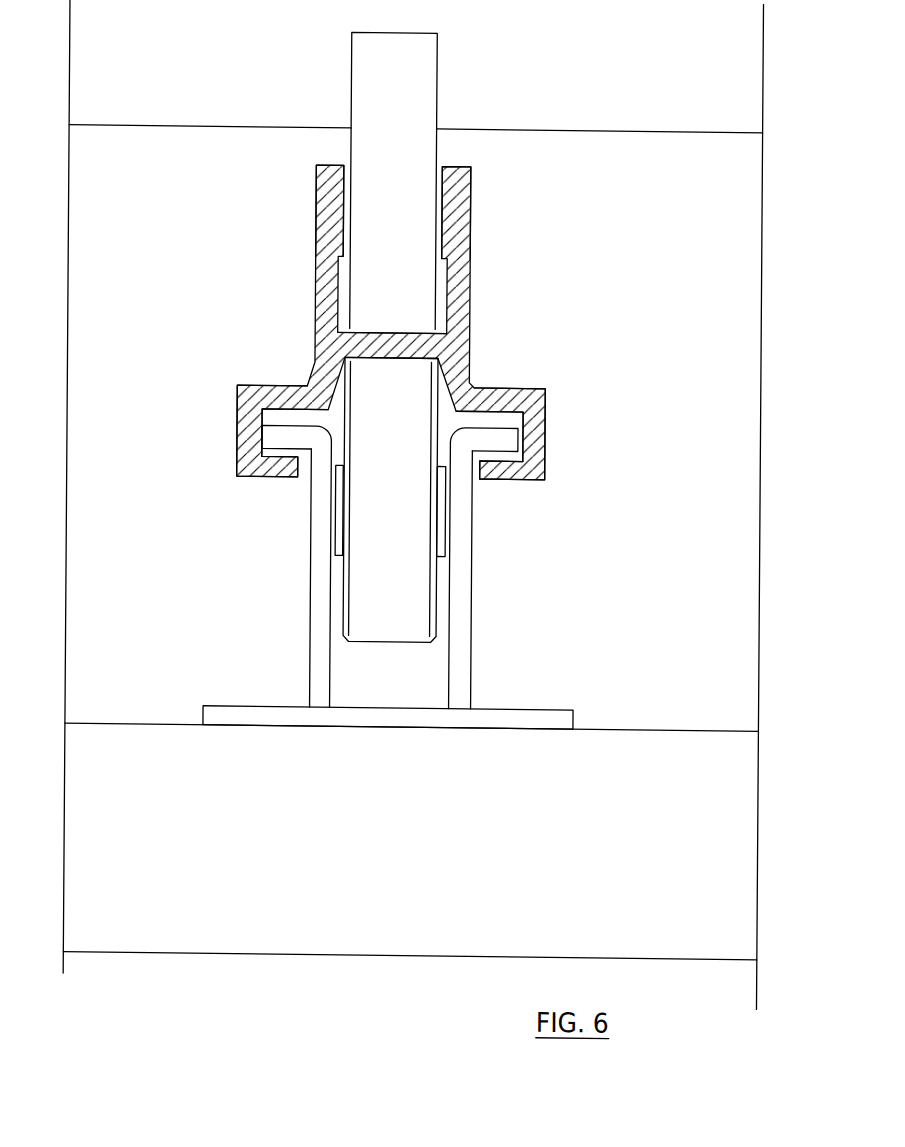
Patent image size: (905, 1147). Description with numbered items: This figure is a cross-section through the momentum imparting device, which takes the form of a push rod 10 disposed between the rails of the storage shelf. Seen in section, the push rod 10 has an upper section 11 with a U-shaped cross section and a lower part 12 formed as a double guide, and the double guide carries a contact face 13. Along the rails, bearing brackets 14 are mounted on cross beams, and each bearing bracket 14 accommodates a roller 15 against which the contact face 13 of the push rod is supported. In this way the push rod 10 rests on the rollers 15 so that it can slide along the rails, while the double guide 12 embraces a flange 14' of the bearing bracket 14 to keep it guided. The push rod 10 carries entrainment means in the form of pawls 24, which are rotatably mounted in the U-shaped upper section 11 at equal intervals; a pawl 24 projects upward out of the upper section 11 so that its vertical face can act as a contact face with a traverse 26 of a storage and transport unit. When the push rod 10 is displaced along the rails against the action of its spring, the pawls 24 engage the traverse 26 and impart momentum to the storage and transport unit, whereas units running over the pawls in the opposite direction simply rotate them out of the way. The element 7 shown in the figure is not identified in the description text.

The wall 7 is at (641, 760).
The push rod 10 is at (470, 331).
The upper section 11 is at (462, 250).
The lower part 12 is at (531, 422).
The contact face 13 is at (365, 351).
The bearing bracket 14 is at (417, 575).
The flange 14' is at (356, 427).
The roller 15 is at (388, 622).
The pawl 24 is at (427, 63).
The traverse 26 is at (598, 102).